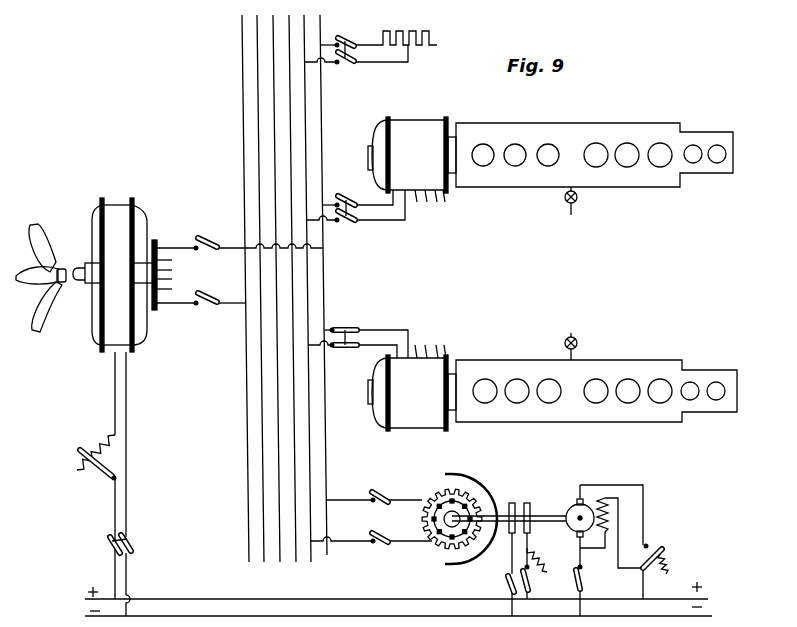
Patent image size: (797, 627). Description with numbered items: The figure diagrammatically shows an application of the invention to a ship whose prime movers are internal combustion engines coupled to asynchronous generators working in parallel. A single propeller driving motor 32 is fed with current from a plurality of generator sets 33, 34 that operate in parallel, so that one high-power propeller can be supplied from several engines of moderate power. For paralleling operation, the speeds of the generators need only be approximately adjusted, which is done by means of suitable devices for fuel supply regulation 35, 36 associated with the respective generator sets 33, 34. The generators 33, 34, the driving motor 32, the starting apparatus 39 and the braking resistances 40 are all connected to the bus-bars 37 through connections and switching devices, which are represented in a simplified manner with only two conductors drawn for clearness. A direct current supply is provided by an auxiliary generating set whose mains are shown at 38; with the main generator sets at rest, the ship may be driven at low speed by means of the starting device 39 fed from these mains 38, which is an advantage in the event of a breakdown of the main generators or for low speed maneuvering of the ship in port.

The propeller driving motor 32 is at (94, 262).
The generator set 33 is at (550, 150).
The generator set 34 is at (552, 394).
The fuel supply regulation device 35 is at (586, 201).
The fuel supply regulation device 36 is at (586, 345).
The bus-bars 37 is at (284, 300).
The mains of auxiliary generating set 38 is at (382, 603).
The starting device 39 is at (508, 516).
The braking resistances 40 is at (404, 51).